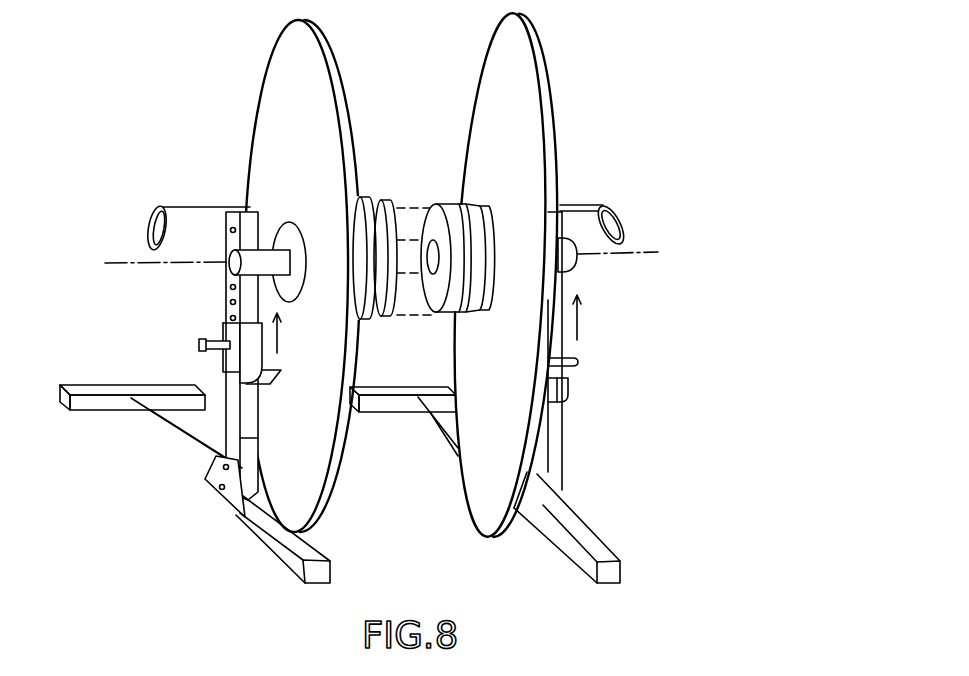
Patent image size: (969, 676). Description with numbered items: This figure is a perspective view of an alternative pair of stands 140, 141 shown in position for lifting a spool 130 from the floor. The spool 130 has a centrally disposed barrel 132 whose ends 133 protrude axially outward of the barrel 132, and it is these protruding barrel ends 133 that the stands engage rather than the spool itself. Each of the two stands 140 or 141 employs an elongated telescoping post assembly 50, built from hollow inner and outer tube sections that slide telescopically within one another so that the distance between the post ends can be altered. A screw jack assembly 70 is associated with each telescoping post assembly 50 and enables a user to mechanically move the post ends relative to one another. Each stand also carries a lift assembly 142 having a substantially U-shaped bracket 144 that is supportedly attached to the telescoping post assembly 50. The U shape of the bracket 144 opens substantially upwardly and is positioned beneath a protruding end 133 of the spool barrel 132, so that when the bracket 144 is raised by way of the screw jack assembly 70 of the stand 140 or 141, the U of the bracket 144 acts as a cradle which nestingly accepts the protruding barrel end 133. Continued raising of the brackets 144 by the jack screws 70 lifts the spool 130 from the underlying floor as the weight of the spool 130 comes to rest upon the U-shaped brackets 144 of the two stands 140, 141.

The telescoping post assembly 50 is at (228, 237).
The screw jack assembly 70 is at (203, 208).
The spool 130 is at (553, 101).
The spool barrel 132 is at (283, 232).
The protruding barrel end 133 is at (227, 265).
The stand 140 is at (197, 467).
The stand 141 is at (583, 525).
The lift assembly 142 is at (228, 352).
The U-shaped bracket 144 is at (258, 388).